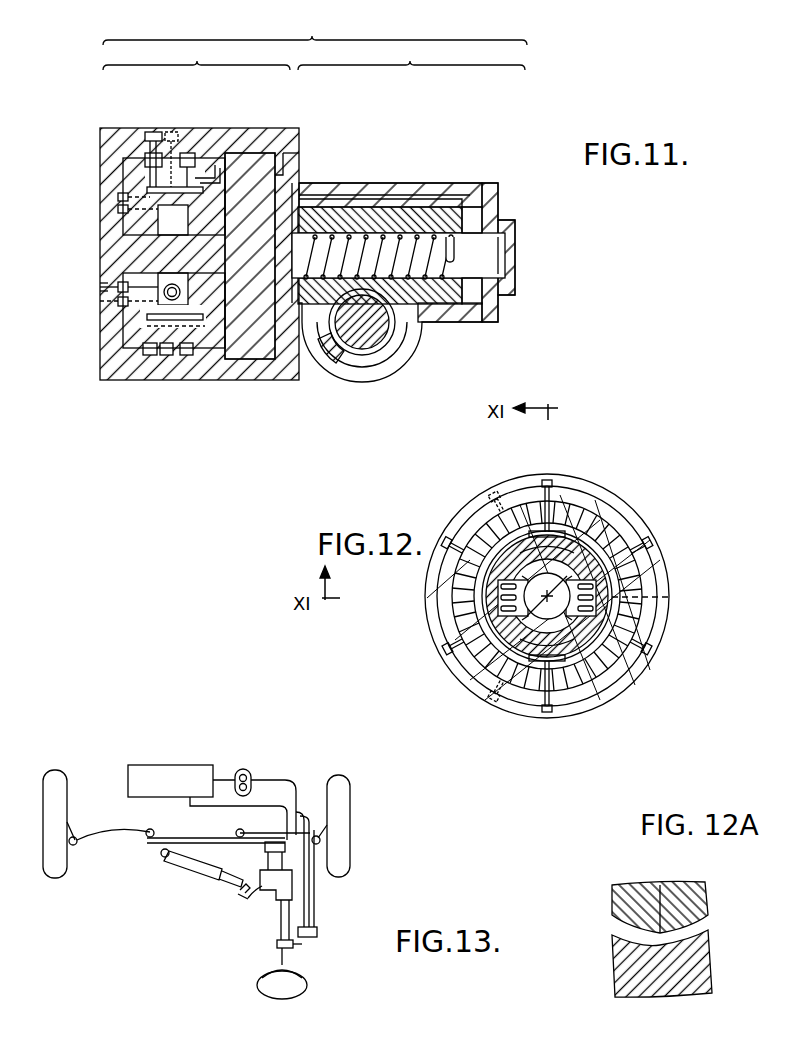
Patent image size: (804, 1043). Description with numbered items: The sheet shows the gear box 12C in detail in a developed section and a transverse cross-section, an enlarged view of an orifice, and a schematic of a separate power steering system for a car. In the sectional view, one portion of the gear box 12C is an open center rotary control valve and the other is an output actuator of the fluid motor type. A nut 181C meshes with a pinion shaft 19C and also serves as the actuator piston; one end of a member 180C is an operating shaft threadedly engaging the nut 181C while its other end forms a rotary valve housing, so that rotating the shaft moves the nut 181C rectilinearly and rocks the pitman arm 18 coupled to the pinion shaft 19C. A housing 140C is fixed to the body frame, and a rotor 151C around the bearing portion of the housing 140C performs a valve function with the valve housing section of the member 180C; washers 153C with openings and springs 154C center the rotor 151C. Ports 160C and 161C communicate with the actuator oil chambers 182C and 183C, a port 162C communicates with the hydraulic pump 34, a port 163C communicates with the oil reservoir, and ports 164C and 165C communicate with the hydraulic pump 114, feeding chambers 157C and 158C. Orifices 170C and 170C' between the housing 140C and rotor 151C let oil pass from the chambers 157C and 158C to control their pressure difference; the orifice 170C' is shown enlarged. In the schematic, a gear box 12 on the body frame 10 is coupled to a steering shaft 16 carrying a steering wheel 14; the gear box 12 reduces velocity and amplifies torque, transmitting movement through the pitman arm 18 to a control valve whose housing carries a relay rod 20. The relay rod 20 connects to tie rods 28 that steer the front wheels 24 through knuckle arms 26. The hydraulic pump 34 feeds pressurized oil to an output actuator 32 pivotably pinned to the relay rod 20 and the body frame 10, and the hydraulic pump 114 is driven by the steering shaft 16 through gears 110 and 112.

In FIG. 11, the gear box 12C is at (315, 42).
In FIG. 11, the housing 140C is at (108, 380).
In FIG. 12, the housing 140C is at (460, 528).
In FIG. 12A, the housing 140C is at (700, 893).
In FIG. 11, the member 180C is at (270, 352).
In FIG. 12, the member 180C is at (585, 522).
In FIG. 11, the port 162C is at (150, 132).
In FIG. 12, the port 162C is at (550, 478).
In FIG. 11, the port 163C is at (170, 132).
In FIG. 12, the port 163C is at (493, 490).
In FIG. 11, the port 160C is at (190, 157).
In FIG. 11, the port 161C is at (226, 164).
In FIG. 11, the port 164C is at (112, 285).
In FIG. 11, the port 165C is at (112, 300).
In FIG. 11, the springs 154C is at (158, 380).
In FIG. 12, the springs 154C is at (505, 598).
In FIG. 11, the chamber 157C is at (123, 381).
In FIG. 12, the chamber 157C is at (505, 612).
In FIG. 11, the chamber 158C is at (134, 406).
In FIG. 12, the chamber 158C is at (596, 590).
In FIG. 11, the rotor 151C is at (208, 381).
In FIG. 12, the rotor 151C is at (556, 692).
In FIG. 12A, the rotor 151C is at (650, 985).
In FIG. 11, the oil chamber 183C is at (300, 195).
In FIG. 11, the nut 181C is at (462, 304).
In FIG. 11, the oil chamber 182C is at (484, 214).
In FIG. 11, the pinion shaft 19C is at (366, 340).
In FIG. 12, the orifice 170C is at (569, 545).
In FIG. 12, the orifice 170C' is at (506, 664).
In FIG. 12A, the orifice 170C' is at (649, 892).
In FIG. 12, the washers 153C is at (590, 578).
In FIG. 13, the front wheels 24 is at (55, 770).
In FIG. 13, the knuckle arms 26 is at (76, 825).
In FIG. 13, the tie rods 28 is at (110, 838).
In FIG. 13, the hydraulic pump 34 is at (243, 768).
In FIG. 13, the relay rod 20 is at (195, 845).
In FIG. 13, the output actuator 32 is at (182, 874).
In FIG. 13, the body frame 10 is at (238, 898).
In FIG. 13, the pitman arm 18 is at (248, 905).
In FIG. 13, the gear box 12 is at (276, 898).
In FIG. 13, the steering shaft 16 is at (280, 930).
In FIG. 13, the hydraulic pump 114 is at (316, 928).
In FIG. 13, the gear 112 is at (292, 944).
In FIG. 13, the gear 110 is at (278, 955).
In FIG. 13, the steering wheel 14 is at (306, 982).